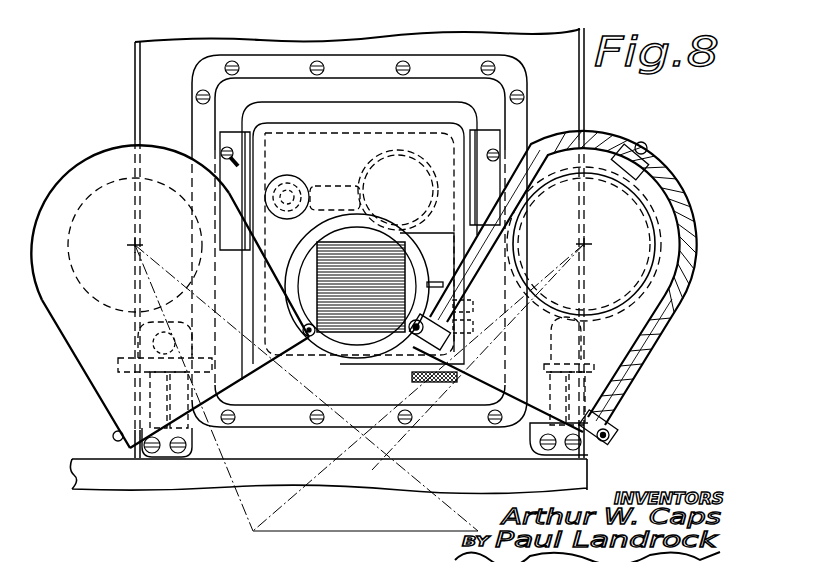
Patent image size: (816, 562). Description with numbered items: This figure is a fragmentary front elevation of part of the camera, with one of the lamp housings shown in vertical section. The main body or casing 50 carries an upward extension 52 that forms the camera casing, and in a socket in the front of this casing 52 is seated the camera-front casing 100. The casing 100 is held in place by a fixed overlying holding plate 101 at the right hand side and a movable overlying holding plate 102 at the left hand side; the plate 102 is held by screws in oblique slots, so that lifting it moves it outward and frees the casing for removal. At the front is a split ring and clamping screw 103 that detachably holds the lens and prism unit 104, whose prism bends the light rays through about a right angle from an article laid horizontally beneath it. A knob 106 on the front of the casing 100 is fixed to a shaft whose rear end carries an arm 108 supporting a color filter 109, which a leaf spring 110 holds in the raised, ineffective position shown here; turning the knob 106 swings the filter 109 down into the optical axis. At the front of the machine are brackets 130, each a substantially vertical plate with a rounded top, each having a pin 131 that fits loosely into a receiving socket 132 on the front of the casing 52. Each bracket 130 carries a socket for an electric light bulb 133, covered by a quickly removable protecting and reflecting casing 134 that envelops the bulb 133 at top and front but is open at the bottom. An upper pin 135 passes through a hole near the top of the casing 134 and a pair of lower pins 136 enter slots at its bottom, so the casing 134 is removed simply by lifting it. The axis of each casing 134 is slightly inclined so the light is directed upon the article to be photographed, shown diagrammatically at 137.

The main body or casing 50 is at (88, 469).
The upward extension 52 is at (137, 80).
The casing 100 is at (404, 93).
The fixed overlying holding plate 101 is at (485, 140).
The movable overlying holding plate 102 is at (220, 137).
The split ring and clamping screw 103 is at (416, 372).
The lens and prism unit 104 is at (329, 255).
The knob 106 is at (297, 165).
The arm 108 is at (325, 187).
The color filter 109 is at (372, 190).
The leaf spring 110 is at (392, 228).
The bracket 130 is at (470, 405).
The pin 131 is at (588, 350).
The receiving socket 132 is at (540, 428).
The electric light bulb 133 is at (677, 190).
The protecting and reflecting casing 134 is at (72, 327).
The upper pin 135 is at (644, 143).
The lower pin 136 is at (113, 436).
The article to be photographed 137 is at (297, 534).